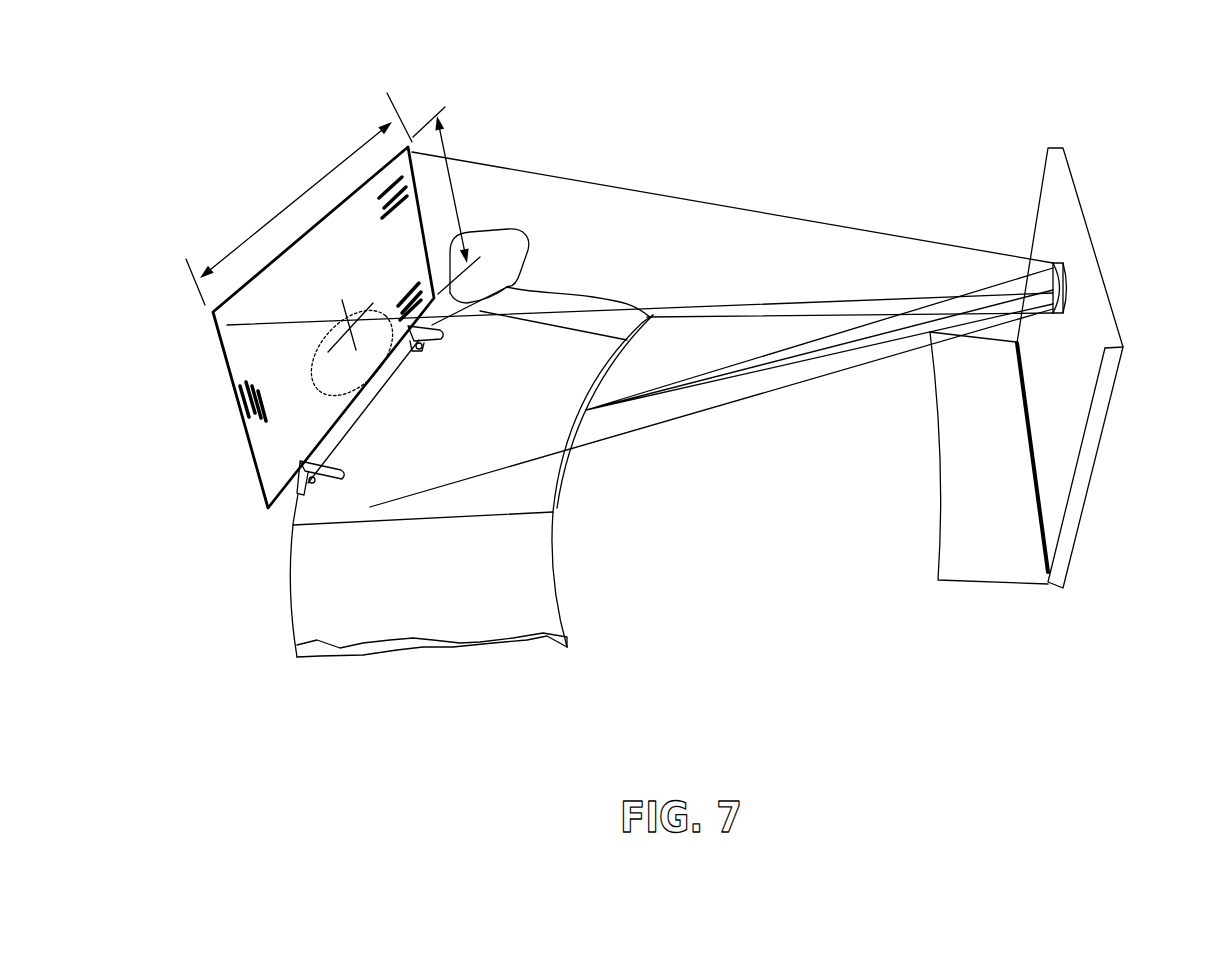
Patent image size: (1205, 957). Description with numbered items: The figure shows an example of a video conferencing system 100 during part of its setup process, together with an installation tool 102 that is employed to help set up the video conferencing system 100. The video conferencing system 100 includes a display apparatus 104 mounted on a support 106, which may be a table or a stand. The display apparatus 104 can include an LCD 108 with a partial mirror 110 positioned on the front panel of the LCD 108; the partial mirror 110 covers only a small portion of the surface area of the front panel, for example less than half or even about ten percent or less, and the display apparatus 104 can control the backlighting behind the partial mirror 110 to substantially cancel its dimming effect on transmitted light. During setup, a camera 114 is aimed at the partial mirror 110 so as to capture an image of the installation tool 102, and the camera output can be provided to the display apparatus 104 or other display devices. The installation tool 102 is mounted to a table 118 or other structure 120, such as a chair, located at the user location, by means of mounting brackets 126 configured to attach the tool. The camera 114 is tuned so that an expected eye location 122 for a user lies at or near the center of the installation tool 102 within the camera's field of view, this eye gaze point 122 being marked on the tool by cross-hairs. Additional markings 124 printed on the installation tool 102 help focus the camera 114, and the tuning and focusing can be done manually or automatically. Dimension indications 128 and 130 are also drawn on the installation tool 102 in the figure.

The video conferencing system 100 is at (1085, 92).
The installation tool 102 is at (250, 466).
The display apparatus 104 is at (1032, 215).
The support 106 is at (995, 572).
The LCD 108 is at (1080, 385).
The partial mirror 110 is at (1065, 297).
The camera 114 is at (585, 412).
The table 118 is at (572, 378).
The other structure 120 is at (313, 372).
The expected eye location 122 is at (350, 323).
The additional markings 124 is at (378, 215).
The mounting brackets 126 is at (413, 350).
The image width 128 is at (318, 178).
The image height 130 is at (447, 149).